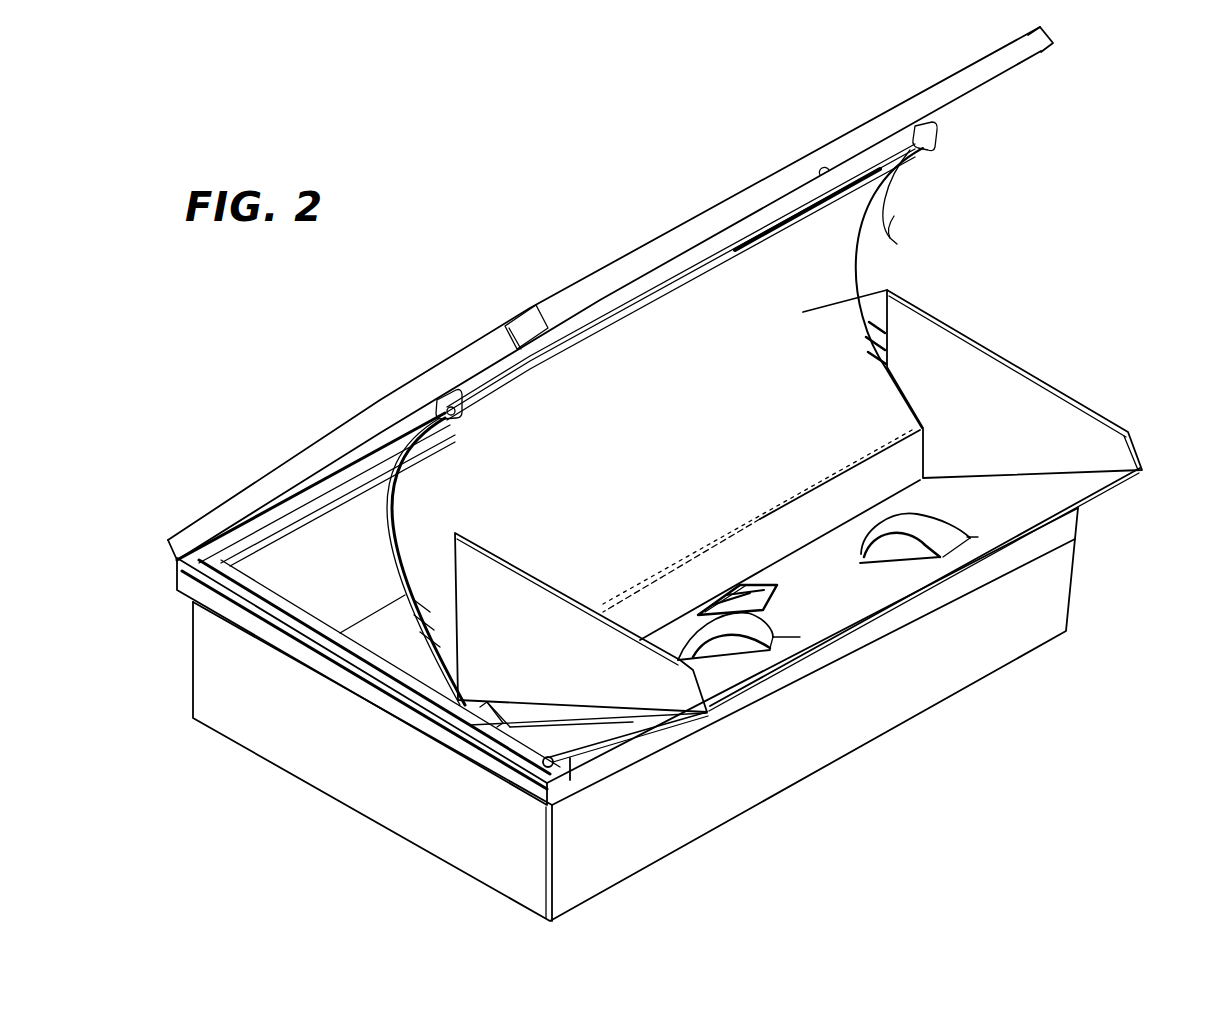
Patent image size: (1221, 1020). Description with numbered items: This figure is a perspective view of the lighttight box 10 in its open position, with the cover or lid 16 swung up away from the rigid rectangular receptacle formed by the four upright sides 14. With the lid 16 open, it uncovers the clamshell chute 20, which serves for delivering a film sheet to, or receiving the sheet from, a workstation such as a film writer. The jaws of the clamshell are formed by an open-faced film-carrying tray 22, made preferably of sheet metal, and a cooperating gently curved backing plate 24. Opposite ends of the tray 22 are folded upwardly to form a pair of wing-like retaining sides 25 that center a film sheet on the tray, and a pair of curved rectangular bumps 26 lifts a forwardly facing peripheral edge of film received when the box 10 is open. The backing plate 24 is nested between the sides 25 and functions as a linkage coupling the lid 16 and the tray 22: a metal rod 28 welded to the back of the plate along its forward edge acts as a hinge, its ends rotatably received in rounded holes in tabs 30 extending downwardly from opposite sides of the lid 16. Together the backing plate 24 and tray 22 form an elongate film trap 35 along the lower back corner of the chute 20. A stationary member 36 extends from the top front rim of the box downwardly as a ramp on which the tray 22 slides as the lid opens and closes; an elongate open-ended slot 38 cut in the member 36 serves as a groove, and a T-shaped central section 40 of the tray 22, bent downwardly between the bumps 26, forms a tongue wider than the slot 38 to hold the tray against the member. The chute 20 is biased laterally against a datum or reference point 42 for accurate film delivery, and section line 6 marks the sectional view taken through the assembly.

The box 10 is at (232, 757).
The upright sides 14 is at (367, 788).
The lid 16 is at (560, 292).
The clamshell chute 20 is at (958, 240).
The film-carrying tray 22 is at (1045, 500).
The backing plate 24 is at (885, 292).
The retaining sides 25 is at (990, 385).
The curved rectangular bumps 26 is at (931, 528).
The metal rod 28 is at (912, 239).
The tabs 30 is at (436, 400).
The film trap 35 is at (846, 524).
The stationary member 36 is at (565, 740).
The slot 38 is at (740, 597).
The T-shaped central section 40 is at (740, 594).
The datum 42 is at (485, 700).
The section line 6- 6 is at (645, 558).